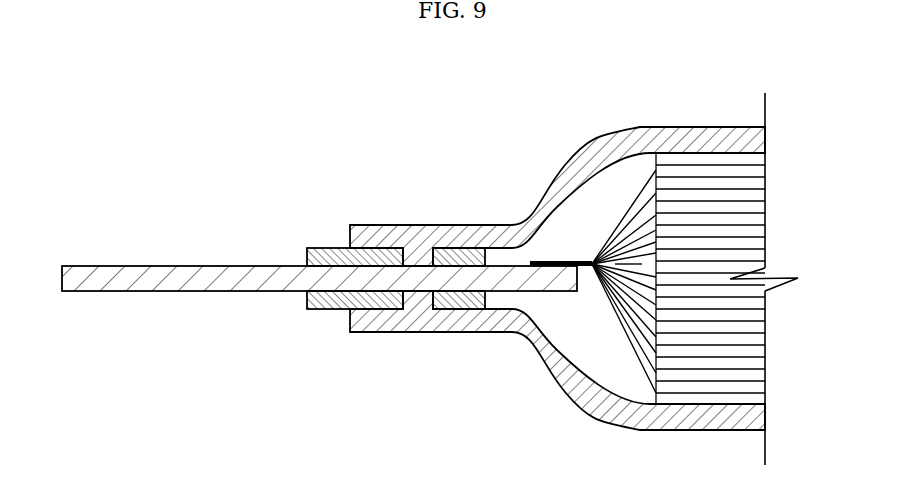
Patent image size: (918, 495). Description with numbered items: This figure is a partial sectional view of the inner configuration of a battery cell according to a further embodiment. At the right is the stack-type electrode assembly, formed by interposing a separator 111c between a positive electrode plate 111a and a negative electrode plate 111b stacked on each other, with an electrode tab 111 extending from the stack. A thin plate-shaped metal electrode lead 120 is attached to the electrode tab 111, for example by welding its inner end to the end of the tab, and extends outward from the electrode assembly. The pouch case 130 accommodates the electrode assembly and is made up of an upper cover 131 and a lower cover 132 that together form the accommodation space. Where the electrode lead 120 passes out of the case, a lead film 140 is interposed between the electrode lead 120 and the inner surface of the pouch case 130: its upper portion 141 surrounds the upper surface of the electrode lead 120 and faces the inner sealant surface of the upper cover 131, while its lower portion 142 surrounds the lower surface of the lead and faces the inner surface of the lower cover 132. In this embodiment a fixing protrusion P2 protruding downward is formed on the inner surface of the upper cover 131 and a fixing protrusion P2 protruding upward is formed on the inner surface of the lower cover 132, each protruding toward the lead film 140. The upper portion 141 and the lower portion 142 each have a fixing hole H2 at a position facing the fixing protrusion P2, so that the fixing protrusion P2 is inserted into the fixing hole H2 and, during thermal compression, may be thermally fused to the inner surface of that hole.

The electrode lead 120 is at (160, 272).
The pouch case 130 is at (557, 267).
The upper cover 131 is at (690, 133).
The lower cover 132 is at (690, 426).
The lead film 140 is at (373, 279).
The upper portion 141 is at (323, 253).
The lower portion 142 is at (325, 305).
The electrode tab 111 is at (581, 268).
The positive electrode plate 111a is at (750, 363).
The negative electrode plate 111b is at (750, 387).
The separator 111c is at (750, 375).
The fixing hole H2 is at (410, 262).
The fixing protrusion P2 is at (420, 266).